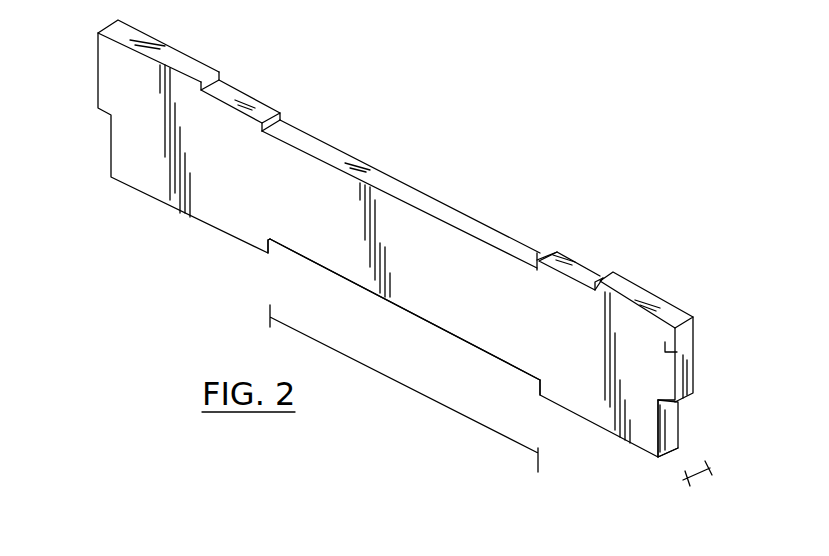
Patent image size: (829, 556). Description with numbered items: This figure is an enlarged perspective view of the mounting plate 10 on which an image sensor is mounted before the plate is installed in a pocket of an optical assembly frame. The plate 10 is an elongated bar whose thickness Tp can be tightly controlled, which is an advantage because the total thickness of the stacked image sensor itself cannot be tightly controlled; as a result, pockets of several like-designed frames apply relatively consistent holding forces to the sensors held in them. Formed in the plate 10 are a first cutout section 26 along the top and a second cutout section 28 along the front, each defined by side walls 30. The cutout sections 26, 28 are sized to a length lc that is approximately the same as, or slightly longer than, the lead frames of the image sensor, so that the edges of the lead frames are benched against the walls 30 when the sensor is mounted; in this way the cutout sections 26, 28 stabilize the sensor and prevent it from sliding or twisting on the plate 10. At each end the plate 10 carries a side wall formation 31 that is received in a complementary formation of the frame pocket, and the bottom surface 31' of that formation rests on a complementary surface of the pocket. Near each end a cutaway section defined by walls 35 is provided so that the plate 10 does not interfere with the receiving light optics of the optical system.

The mounting plate 10 is at (600, 405).
The first cutout section 26 is at (503, 230).
The second cutout section 28 is at (318, 282).
The side wall 30 is at (290, 127).
The side wall formation 31 is at (392, 238).
The bottom surface 31' is at (715, 428).
The cutaway section wall 35 is at (220, 83).
The cutout length lc is at (423, 397).
The plate thickness Tp is at (696, 477).